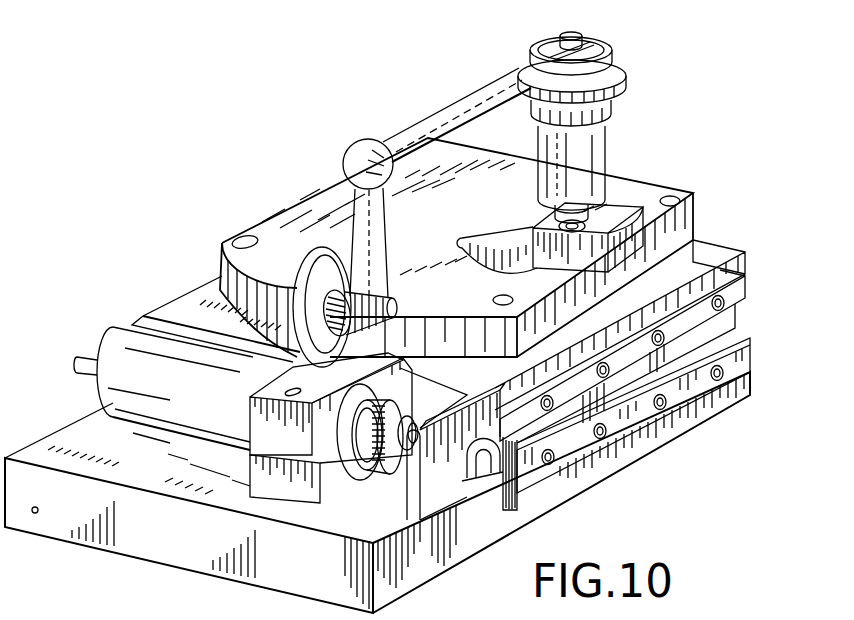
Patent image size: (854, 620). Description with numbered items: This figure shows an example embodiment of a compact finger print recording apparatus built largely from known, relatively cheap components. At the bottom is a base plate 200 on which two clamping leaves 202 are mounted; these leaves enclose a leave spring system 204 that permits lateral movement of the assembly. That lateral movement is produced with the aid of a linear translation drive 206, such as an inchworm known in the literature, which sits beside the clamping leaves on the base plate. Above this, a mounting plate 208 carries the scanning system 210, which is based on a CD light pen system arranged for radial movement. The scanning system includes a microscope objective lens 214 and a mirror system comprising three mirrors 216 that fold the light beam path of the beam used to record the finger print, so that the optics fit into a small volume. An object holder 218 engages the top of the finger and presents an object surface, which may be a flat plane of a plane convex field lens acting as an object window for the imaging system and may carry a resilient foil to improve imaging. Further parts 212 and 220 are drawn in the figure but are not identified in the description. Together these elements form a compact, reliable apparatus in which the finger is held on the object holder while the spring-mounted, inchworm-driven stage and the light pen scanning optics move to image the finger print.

The base plate 200 is at (83, 433).
The clamping leaves 202 is at (745, 282).
The leave spring system 204 is at (735, 313).
The linear translation drive 206 is at (123, 340).
The mounting plate 208 is at (710, 250).
The scanning system 210 is at (698, 223).
The arcuate guide block 212 is at (640, 207).
The microscope objective lens 214 is at (627, 84).
The mirrors 216 is at (600, 33).
The object holder 218 is at (307, 282).
The pivot ring 220 is at (328, 253).